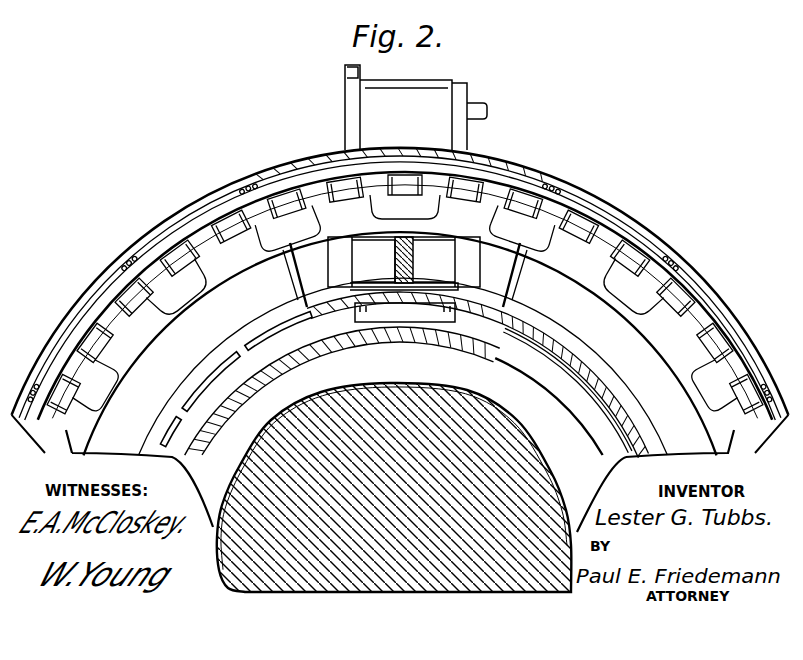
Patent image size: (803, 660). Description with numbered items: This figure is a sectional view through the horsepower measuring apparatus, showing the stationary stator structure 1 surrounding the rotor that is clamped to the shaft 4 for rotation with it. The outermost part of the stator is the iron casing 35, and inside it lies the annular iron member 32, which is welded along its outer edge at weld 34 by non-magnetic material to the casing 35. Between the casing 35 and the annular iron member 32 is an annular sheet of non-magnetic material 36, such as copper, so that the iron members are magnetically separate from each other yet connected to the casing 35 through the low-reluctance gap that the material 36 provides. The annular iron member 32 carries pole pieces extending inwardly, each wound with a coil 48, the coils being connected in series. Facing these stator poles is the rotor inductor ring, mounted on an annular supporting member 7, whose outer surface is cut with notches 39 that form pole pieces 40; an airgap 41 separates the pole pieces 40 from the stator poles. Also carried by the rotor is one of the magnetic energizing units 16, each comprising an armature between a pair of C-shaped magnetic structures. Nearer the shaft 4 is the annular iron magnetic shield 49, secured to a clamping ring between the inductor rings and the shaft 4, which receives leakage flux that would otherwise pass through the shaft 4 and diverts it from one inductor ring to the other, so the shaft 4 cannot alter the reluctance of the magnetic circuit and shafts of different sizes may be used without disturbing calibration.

The stator structure 1 is at (60, 337).
The shaft 4 is at (445, 393).
The annular supporting member 7 is at (240, 343).
The magnetic energizing unit 16 is at (470, 238).
The annular iron member 32 is at (190, 222).
The weld 34 is at (304, 167).
The iron casing 35 is at (478, 160).
The annular sheet of non-magnetic material 36 is at (563, 183).
The notch 39 is at (645, 278).
The pole piece 40 is at (612, 236).
The airgap 41 is at (555, 230).
The coil 48 is at (203, 200).
The annular iron magnetic shield 49 is at (558, 395).